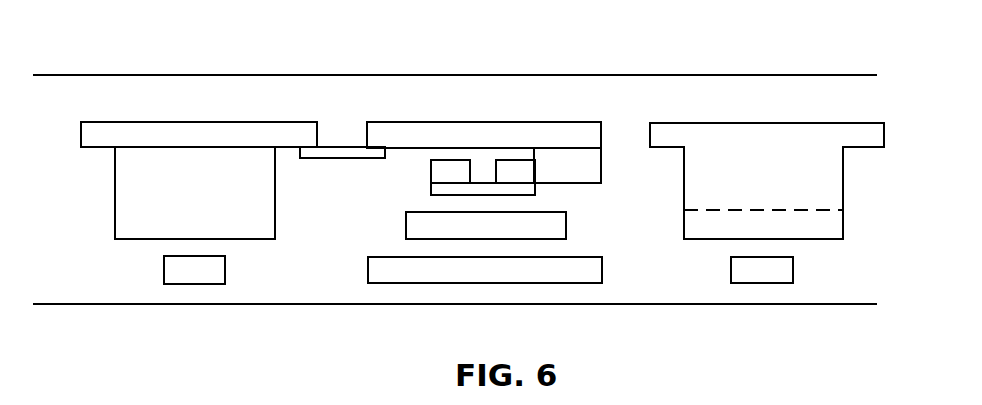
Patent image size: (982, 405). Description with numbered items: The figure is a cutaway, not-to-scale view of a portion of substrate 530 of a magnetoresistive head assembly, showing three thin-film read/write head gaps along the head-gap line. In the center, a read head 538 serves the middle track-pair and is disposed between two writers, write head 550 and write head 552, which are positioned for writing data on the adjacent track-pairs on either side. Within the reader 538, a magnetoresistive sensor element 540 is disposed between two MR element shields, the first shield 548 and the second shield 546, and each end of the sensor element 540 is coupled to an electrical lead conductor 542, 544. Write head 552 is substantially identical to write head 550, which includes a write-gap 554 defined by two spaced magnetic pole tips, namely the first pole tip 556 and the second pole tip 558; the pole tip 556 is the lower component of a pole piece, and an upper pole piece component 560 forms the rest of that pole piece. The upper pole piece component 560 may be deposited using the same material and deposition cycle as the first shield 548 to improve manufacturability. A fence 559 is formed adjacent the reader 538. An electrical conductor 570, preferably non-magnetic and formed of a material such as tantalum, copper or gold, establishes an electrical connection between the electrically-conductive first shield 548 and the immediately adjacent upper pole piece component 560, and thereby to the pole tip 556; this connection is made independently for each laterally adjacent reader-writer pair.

The substrate 530 is at (115, 75).
The write head 550 is at (210, 159).
The read head 538 is at (526, 186).
The write head 552 is at (799, 96).
The upper pole piece component 560 is at (115, 122).
The magnetic pole tip P1 556 is at (115, 228).
The write-gap 554 is at (158, 246).
The magnetic pole tip P2 558 is at (225, 265).
The electrical conductor 570 is at (325, 158).
The MR element S1 shield 548 is at (367, 137).
The electrical lead conductor 542 is at (432, 168).
The magnetoresistive sensor element 540 is at (432, 188).
The electrical lead conductor 544 is at (535, 170).
The MR element S2 shield 546 is at (566, 226).
The fence 559 is at (495, 283).